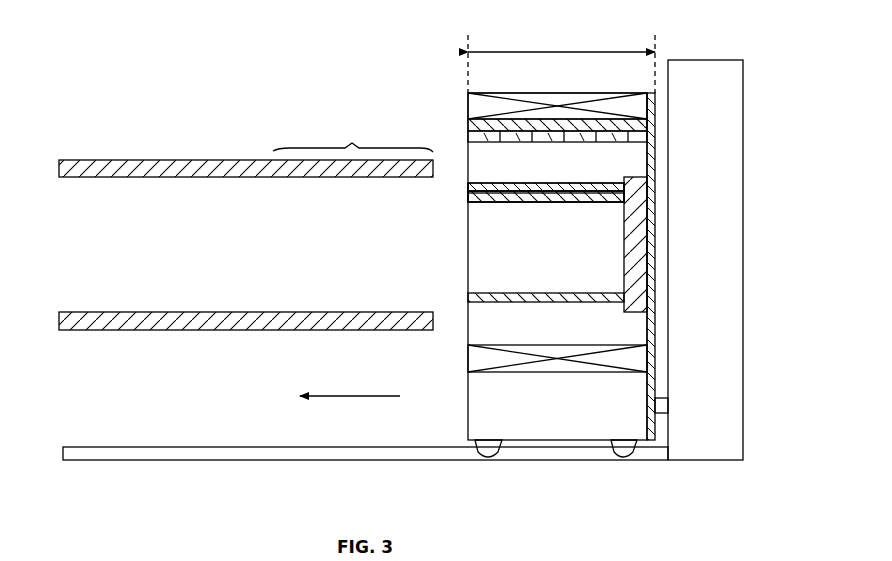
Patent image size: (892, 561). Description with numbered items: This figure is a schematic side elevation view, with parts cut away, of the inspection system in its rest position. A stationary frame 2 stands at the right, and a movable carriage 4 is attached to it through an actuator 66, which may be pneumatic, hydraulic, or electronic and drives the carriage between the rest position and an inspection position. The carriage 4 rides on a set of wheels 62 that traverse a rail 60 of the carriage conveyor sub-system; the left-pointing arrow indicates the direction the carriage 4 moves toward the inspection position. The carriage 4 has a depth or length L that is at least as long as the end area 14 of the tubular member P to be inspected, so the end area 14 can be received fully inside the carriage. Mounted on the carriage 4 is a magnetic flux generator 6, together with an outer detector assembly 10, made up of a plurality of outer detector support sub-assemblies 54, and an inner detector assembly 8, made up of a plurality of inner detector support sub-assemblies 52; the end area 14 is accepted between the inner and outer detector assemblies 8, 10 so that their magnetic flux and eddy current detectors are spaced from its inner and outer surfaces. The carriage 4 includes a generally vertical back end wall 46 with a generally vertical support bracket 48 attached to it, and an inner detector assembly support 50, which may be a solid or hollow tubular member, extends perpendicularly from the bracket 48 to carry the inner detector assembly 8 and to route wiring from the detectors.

The frame 2 is at (705, 60).
The depth or length L is at (562, 50).
The tubular member P is at (135, 158).
The end area 14 is at (353, 136).
The movable carriage 4 is at (477, 423).
The magnetic flux generator 6 is at (475, 107).
The inner detector assembly 8 is at (548, 185).
The outer detector assembly 10 is at (543, 142).
The back end wall 46 is at (655, 205).
The support bracket 48 is at (628, 245).
The inner detector assembly support 50 is at (533, 201).
The inner detector support sub-assemblies 52 is at (468, 195).
The outer detector support sub-assemblies 54 is at (470, 128).
The rail 60 is at (165, 453).
The wheels 62 is at (491, 459).
The actuator 66 is at (670, 405).